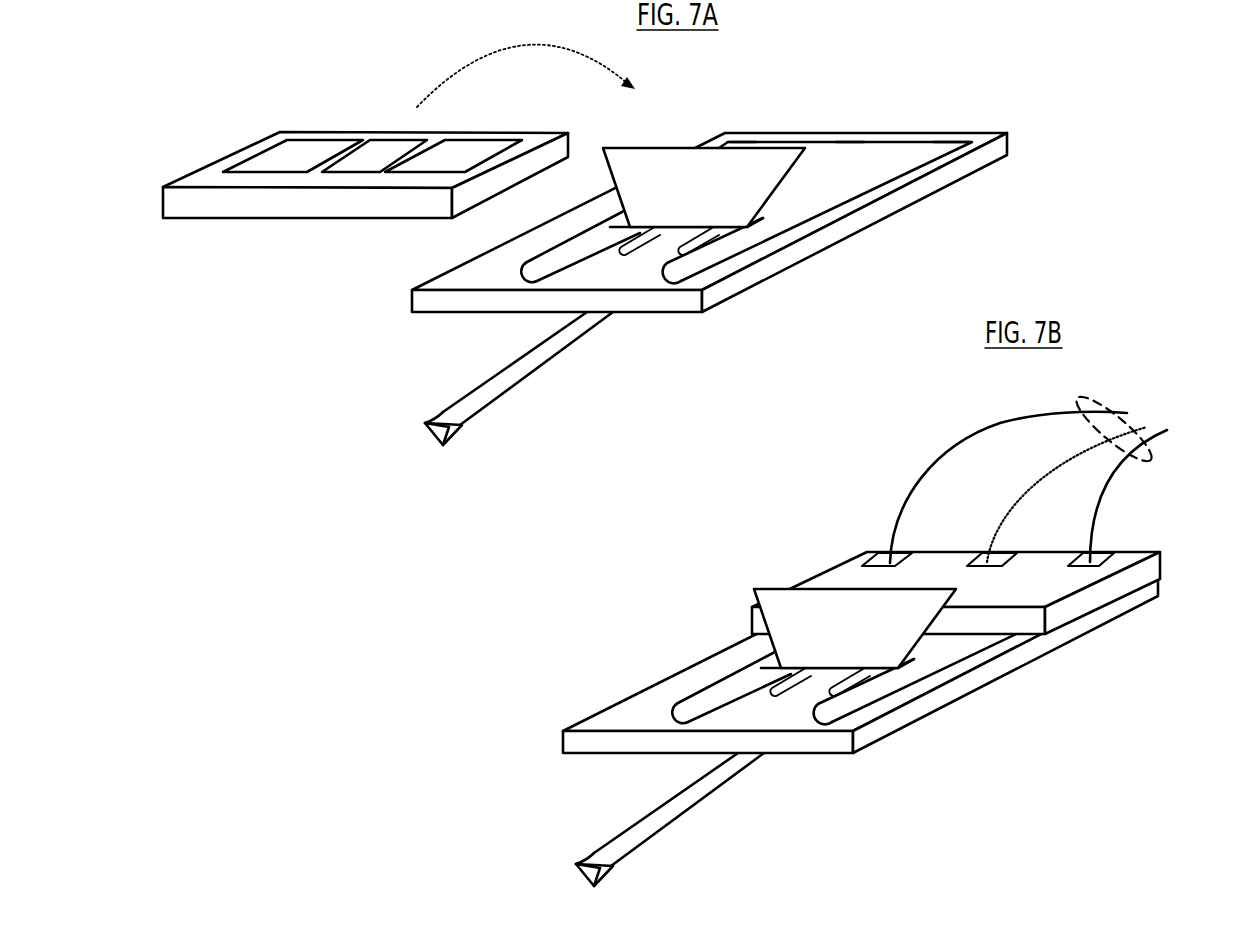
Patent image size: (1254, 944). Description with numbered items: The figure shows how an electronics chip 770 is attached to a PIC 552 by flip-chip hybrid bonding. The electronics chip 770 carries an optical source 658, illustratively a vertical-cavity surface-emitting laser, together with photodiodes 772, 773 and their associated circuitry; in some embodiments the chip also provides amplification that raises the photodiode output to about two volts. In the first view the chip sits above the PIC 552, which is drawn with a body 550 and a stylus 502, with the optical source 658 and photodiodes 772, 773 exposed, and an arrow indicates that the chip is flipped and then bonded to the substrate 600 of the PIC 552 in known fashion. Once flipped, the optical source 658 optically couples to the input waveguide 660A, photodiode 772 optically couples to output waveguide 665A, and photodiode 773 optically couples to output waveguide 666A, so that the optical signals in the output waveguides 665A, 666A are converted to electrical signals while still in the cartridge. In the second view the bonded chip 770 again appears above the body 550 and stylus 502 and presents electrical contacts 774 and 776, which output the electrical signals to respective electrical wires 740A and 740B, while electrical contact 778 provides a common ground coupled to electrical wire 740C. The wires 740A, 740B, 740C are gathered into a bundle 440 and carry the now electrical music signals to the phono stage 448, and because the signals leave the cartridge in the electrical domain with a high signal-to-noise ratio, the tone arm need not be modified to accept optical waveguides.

In FIG. 7A, the electronics chip 770 is at (365, 197).
In FIG. 7B, the electronics chip 770 is at (970, 588).
In FIG. 7A, the photodiode 772 is at (308, 165).
In FIG. 7A, the photodiode 773 is at (472, 165).
In FIG. 7A, the optical source 658 is at (377, 153).
In FIG. 7A, the PIC 552 is at (870, 218).
In FIG. 7B, the PIC 552 is at (917, 693).
In FIG. 7A, the substrate 600 is at (853, 188).
In FIG. 7A, the input waveguide 660A is at (842, 143).
In FIG. 7A, the output waveguide 665A is at (947, 140).
In FIG. 7A, the output waveguide 666A is at (742, 143).
In FIG. 7A, the cartridge body 550 is at (715, 200).
In FIG. 7B, the cartridge body 550 is at (853, 638).
In FIG. 7B, the stylus needle 502 is at (672, 828).
In FIG. 7B, the electrical contact 776 is at (883, 562).
In FIG. 7B, the electrical contact 778 is at (1025, 548).
In FIG. 7B, the electrical contact 774 is at (1110, 553).
In FIG. 7B, the electrical wire 740A is at (1100, 513).
In FIG. 7B, the electrical wire 740B is at (937, 457).
In FIG. 7B, the electrical wire 740C is at (980, 527).
In FIG. 7B, the cable bundle 440 is at (1077, 398).
In FIG. 7B, the phono stage 448 is at (1197, 399).